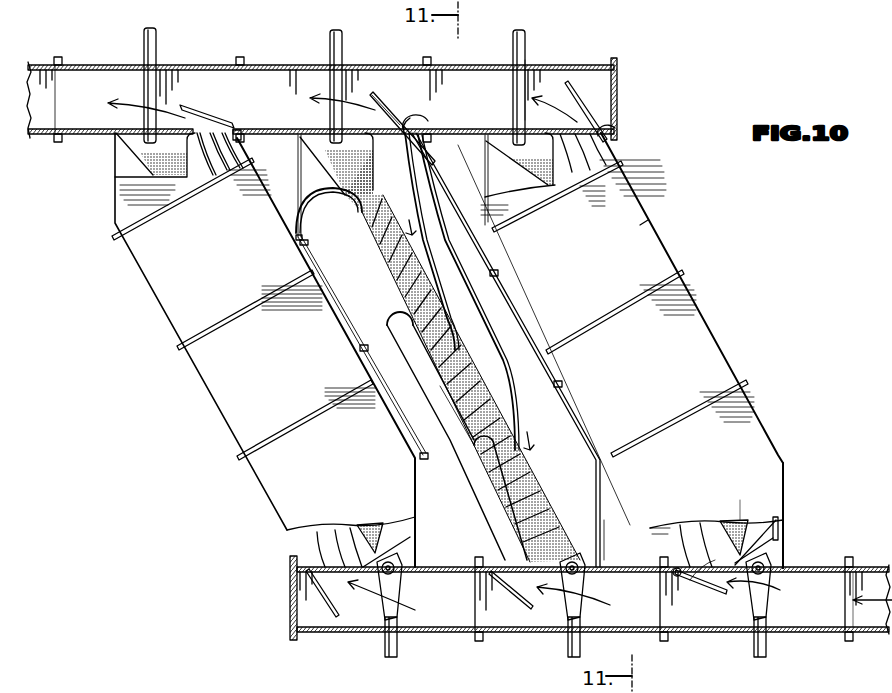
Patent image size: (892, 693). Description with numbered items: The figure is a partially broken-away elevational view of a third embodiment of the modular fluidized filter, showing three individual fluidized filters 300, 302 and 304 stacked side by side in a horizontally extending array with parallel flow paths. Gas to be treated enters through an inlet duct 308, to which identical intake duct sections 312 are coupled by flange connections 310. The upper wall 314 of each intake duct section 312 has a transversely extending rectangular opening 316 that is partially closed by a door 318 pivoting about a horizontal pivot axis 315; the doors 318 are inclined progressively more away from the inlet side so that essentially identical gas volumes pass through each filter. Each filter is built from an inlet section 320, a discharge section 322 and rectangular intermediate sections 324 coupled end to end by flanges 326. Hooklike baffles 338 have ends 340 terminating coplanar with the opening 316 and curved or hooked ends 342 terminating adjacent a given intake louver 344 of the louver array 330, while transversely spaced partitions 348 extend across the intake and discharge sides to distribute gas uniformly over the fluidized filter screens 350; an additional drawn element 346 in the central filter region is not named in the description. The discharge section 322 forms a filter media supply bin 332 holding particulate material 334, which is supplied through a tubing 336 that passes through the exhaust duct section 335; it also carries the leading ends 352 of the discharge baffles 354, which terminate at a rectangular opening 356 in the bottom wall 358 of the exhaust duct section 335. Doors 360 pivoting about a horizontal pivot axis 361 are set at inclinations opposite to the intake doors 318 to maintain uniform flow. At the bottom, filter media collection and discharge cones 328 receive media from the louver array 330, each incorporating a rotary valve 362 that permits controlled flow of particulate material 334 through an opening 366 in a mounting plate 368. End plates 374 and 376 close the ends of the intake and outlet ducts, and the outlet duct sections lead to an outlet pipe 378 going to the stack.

The fluidized filter 300 is at (209, 408).
The fluidized filter 302 is at (406, 443).
The fluidized filter 304 is at (671, 239).
The inlet duct 308 is at (868, 632).
The flange connections 310 is at (663, 638).
The intake duct sections 312 is at (430, 640).
The upper wall 314 is at (607, 567).
The horizontal pivot axis 315 is at (677, 575).
The rectangular opening 316 is at (517, 590).
The door 318 is at (690, 580).
The inlet section 320 is at (763, 443).
The discharge section 322 is at (612, 160).
The intermediate sections 324 is at (630, 233).
The flanges 326 is at (688, 272).
The filter media collection and discharge cones 328 is at (777, 601).
The louver array 330 is at (763, 514).
The filter media supply bin 332 is at (549, 145).
The particulate material 334 is at (330, 165).
The exhaust duct section 335 is at (545, 58).
The tubing 336 is at (519, 34).
The hooklike baffles 338 is at (495, 487).
The ends 340 is at (503, 543).
The curved or hooked ends 342 is at (360, 347).
The intake louver 344 is at (387, 247).
The screw conveyor chute 346 is at (452, 338).
The partitions 348 is at (353, 278).
The fluidized filter screens 350 is at (515, 475).
The leading ends 352 is at (418, 122).
The discharge baffles 354 is at (472, 263).
The rectangular opening 356 is at (380, 120).
The bottom wall 358 is at (468, 135).
The doors 360 is at (190, 95).
The horizontal pivot axis 361 is at (237, 128).
The rotary valve 362 is at (768, 567).
The opening 366 is at (735, 508).
The mounting plate 368 is at (772, 540).
The end plate 374 is at (290, 605).
The end plate 376 is at (245, 55).
The outlet pipe 378 is at (44, 64).